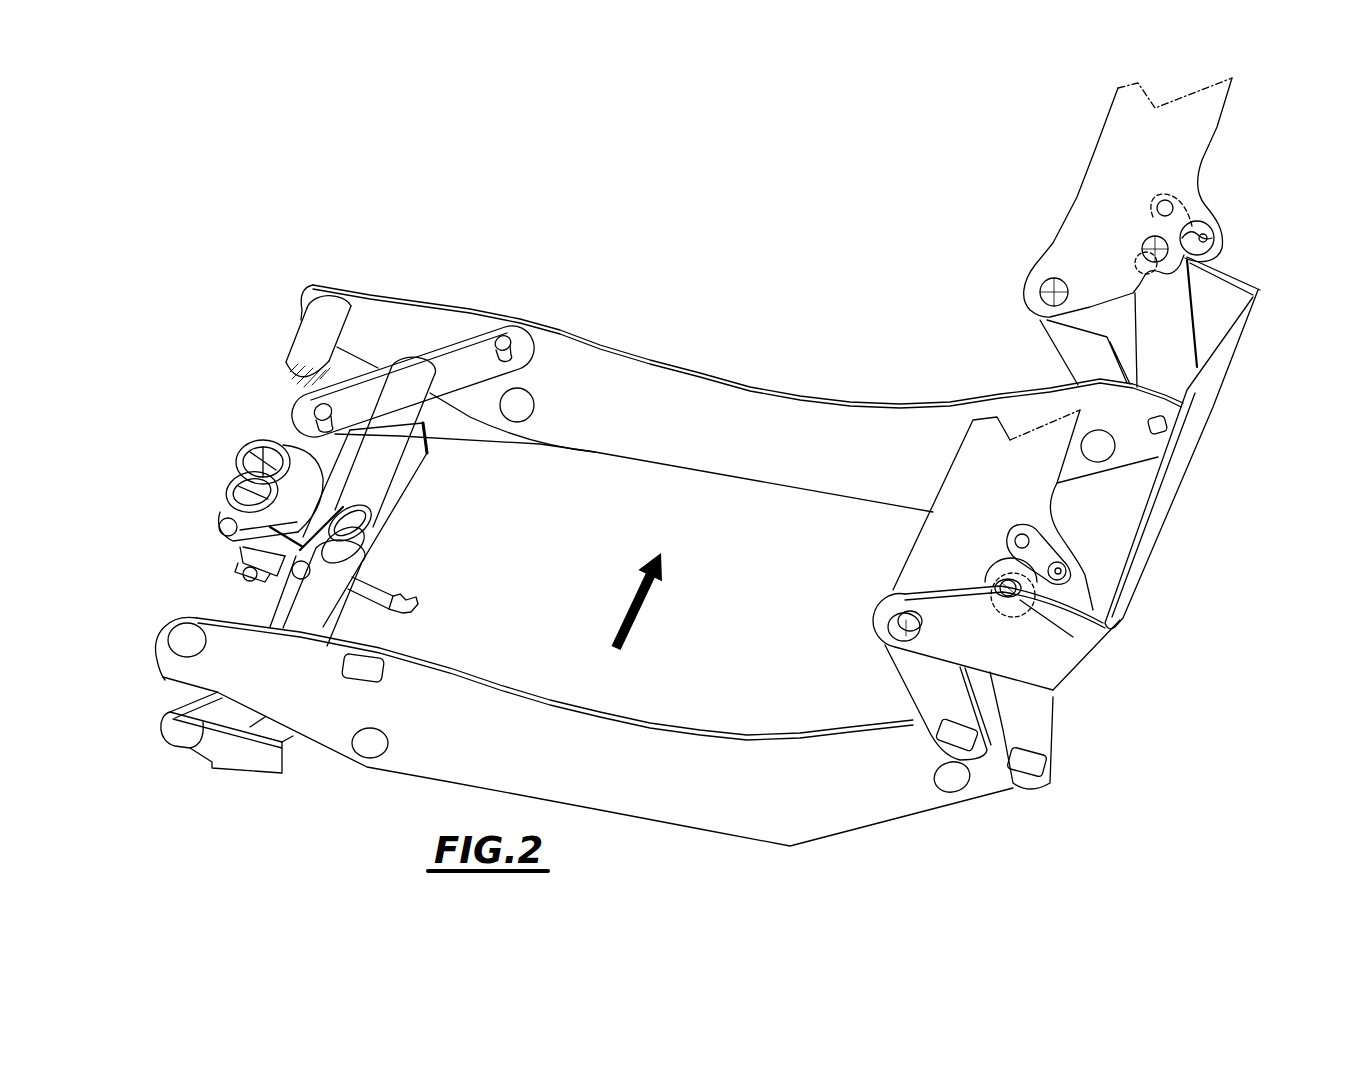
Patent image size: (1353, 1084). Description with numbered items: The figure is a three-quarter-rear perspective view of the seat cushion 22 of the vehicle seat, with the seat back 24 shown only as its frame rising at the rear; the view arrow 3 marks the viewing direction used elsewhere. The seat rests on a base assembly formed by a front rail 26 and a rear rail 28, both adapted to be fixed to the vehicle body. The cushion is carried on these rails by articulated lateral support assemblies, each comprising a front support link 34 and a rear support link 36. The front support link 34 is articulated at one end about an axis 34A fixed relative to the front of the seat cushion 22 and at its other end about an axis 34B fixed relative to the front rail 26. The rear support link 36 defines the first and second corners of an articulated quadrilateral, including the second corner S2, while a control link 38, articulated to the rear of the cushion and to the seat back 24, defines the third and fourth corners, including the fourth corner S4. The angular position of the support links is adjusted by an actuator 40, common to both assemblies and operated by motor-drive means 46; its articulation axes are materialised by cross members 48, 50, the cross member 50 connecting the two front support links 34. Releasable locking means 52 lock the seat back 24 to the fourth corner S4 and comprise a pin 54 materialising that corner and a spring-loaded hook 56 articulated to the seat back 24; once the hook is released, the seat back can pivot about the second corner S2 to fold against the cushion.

The seat cushion 22 is at (748, 425).
The seat back 24 is at (1210, 151).
The front rail 26 is at (248, 767).
The rear rail 28 is at (1050, 648).
The front support link 34 is at (455, 355).
The articulation axis 34A is at (513, 343).
The articulation axis 34B is at (318, 415).
The rear support link 36 is at (935, 680).
The control link 38 is at (1022, 700).
The actuator 40 is at (400, 586).
The motor-drive means 46 is at (303, 475).
The cross member 48 is at (312, 335).
The cross member 50 is at (400, 432).
The locking means 52 is at (988, 541).
The pin 54 is at (1020, 585).
The hook 56 is at (1040, 550).
The second corner S2 is at (1046, 294).
The fourth corner S4 is at (1143, 248).
The view direction of FIG. 3 is at (629, 601).